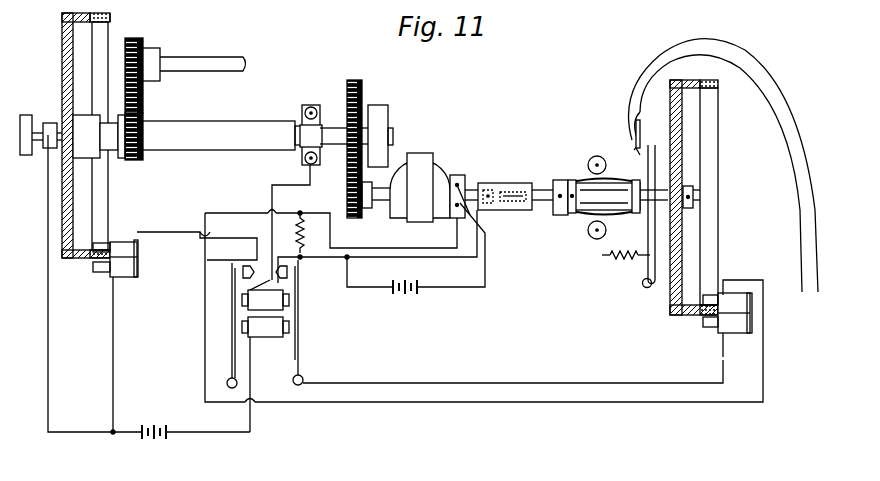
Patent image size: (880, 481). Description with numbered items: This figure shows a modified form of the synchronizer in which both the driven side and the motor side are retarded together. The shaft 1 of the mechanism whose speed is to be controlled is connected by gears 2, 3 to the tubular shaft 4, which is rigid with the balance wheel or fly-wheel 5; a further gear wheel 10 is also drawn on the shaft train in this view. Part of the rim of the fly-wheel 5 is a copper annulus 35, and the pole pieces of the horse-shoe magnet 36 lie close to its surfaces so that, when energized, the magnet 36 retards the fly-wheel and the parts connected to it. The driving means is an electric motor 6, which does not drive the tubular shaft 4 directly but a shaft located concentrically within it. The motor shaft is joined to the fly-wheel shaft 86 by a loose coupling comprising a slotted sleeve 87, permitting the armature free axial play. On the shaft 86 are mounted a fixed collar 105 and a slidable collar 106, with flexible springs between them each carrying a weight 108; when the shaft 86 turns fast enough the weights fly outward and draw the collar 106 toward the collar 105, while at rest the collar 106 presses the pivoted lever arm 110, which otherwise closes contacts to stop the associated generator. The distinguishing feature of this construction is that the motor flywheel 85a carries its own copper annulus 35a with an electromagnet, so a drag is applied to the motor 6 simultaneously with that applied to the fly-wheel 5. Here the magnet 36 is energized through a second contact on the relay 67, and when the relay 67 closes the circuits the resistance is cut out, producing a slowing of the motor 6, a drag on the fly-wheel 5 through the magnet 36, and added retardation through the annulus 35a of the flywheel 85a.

The shaft 1 is at (218, 60).
The gear 2 is at (140, 40).
The gear 3 is at (143, 112).
The tubular shaft 4 is at (228, 126).
The fly-wheel 5 is at (62, 208).
The electric motor 6 is at (420, 165).
The gear wheel 10 is at (362, 90).
The copper annulus 35 is at (108, 204).
The copper annulus 35a is at (718, 246).
The horse-shoe magnet 36 is at (128, 277).
The relay 67 is at (270, 337).
The motor flywheel 85a is at (682, 234).
The fly-wheel shaft 86 is at (551, 184).
The slotted sleeve 87 is at (500, 183).
The collar 105 is at (568, 214).
The collar 106 is at (634, 214).
The weight 108 is at (598, 239).
The lever arm 110 is at (646, 267).